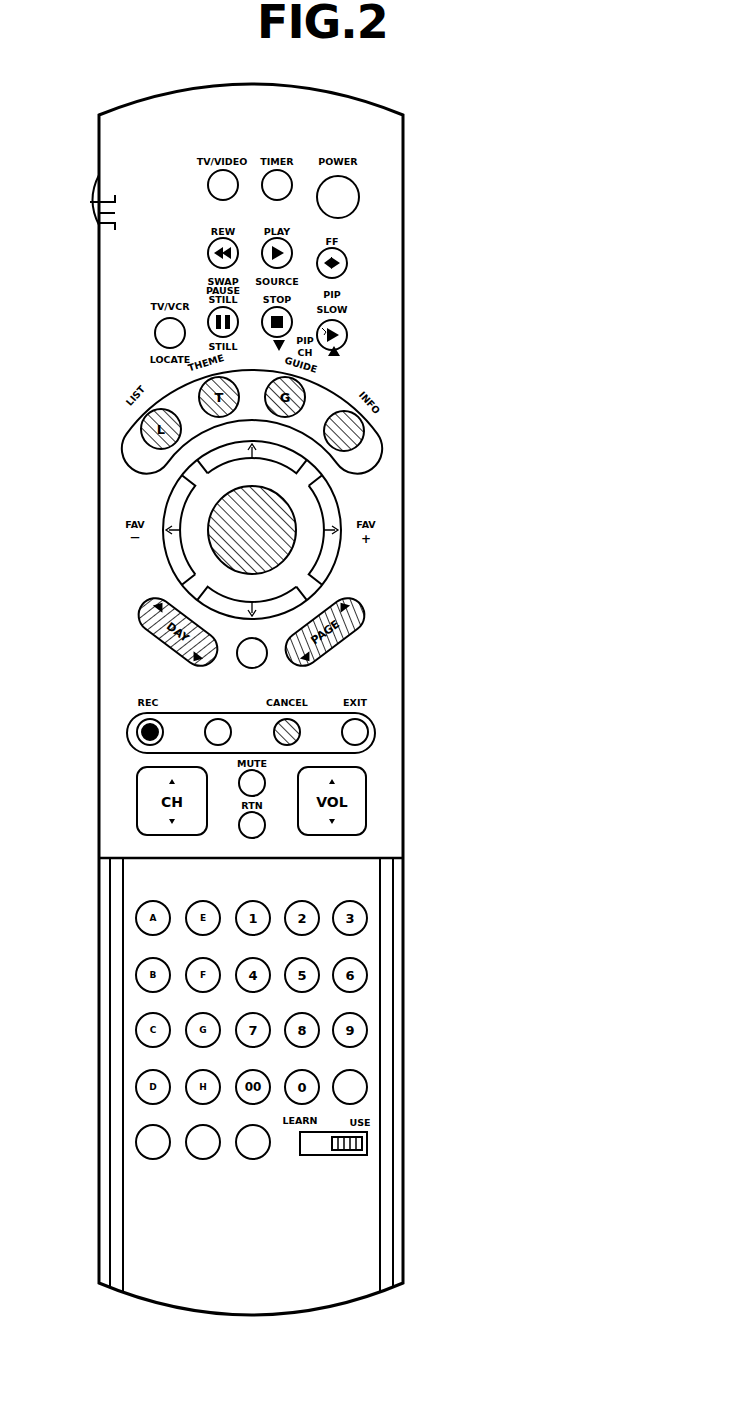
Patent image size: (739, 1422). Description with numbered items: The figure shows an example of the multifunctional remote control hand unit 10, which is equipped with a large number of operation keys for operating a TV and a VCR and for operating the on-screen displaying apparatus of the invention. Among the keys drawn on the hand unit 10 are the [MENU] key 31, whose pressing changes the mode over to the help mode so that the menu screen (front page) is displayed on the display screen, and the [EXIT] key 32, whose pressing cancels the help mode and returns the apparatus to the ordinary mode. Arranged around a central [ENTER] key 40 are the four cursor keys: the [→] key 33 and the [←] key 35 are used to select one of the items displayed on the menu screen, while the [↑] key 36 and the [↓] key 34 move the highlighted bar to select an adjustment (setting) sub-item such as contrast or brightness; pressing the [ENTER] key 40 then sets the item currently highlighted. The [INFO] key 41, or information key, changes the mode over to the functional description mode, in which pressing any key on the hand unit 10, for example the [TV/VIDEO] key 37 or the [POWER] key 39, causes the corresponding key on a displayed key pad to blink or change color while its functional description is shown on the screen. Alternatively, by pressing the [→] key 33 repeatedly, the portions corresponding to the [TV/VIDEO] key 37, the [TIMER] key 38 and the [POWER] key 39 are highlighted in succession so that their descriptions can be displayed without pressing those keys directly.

The remote control hand unit 10 is at (506, 390).
The [MENU] key 31 is at (267, 660).
The [EXIT] key 32 is at (367, 732).
The [→] key 33 is at (327, 508).
The [↓] key 34 is at (283, 607).
The [←] key 35 is at (170, 557).
The [↑] key 36 is at (213, 458).
The [TV/VIDEO] key 37 is at (238, 183).
The [TIMER] key 38 is at (290, 187).
The [POWER] key 39 is at (358, 199).
The [ENTER] key 40 is at (277, 507).
The [INFO] key 41 is at (363, 430).